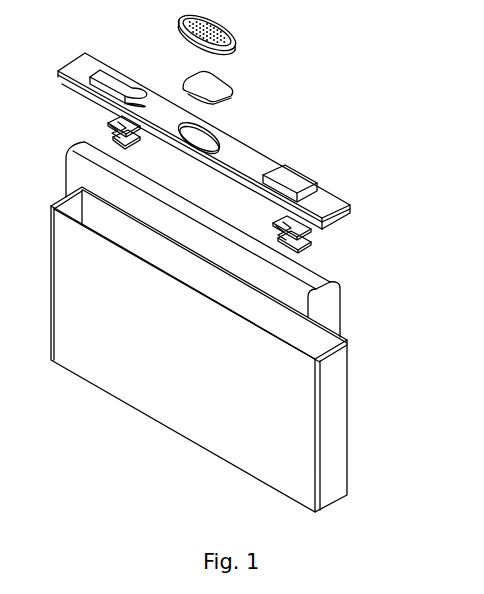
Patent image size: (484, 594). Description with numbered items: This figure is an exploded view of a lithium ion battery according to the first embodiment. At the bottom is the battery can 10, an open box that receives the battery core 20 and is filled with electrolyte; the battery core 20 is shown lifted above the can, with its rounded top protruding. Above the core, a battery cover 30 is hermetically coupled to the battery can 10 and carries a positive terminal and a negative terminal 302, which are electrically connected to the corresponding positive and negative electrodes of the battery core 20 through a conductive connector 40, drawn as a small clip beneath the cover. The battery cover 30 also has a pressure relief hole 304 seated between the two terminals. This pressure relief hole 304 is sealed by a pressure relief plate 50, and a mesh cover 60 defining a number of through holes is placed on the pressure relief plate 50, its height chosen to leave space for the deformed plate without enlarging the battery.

The battery can 10 is at (337, 425).
The battery core 20 is at (335, 312).
The battery cover 30 is at (333, 202).
The negative terminal 302 is at (283, 173).
The pressure relief hole 304 is at (216, 145).
The conductive connector 40 is at (311, 241).
The pressure relief plate 50 is at (222, 91).
The mesh cover 60 is at (234, 45).